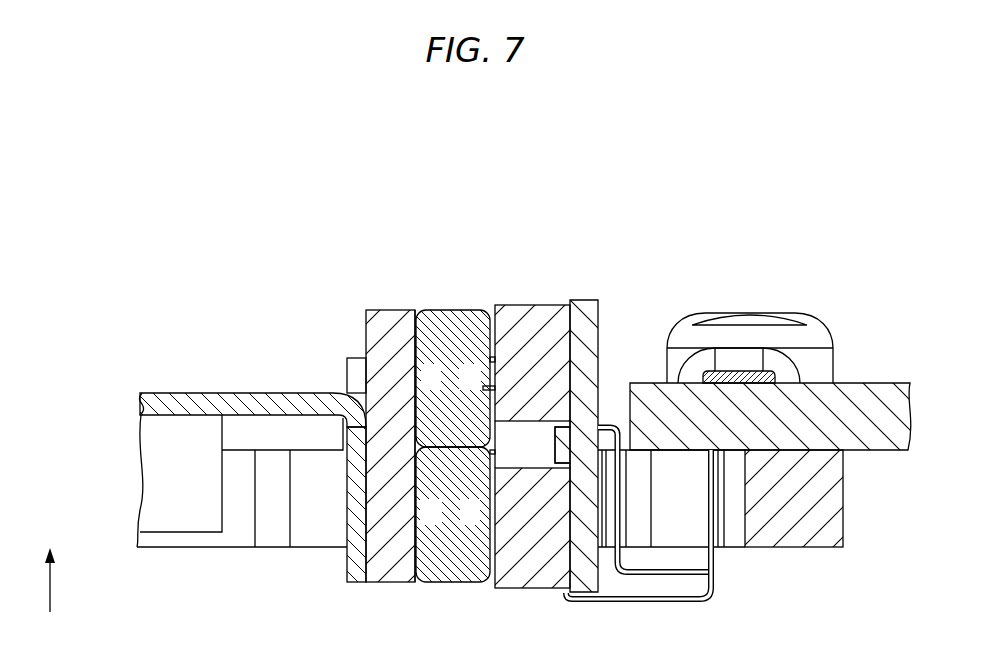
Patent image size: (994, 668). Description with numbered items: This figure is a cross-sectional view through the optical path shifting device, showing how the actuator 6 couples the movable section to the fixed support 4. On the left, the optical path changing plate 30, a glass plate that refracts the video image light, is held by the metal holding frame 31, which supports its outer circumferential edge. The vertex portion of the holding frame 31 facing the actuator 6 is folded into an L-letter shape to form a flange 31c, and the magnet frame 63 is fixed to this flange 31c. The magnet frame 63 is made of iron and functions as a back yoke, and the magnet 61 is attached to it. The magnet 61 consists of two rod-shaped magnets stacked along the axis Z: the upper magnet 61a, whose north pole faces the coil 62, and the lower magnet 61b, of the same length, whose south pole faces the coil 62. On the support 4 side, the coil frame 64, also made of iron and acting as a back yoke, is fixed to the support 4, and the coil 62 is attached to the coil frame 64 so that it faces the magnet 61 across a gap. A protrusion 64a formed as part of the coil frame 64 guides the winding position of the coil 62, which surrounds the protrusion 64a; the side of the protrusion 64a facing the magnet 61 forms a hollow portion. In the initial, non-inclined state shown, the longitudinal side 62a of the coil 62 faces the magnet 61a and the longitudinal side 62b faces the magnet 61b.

The support 4 is at (882, 392).
The actuator 6 is at (570, 161).
The optical path changing plate 30 is at (148, 457).
The holding frame 31 is at (220, 400).
The flange 31c is at (345, 498).
The magnet 61 is at (438, 391).
The magnet 61a is at (467, 310).
The magnet 61b is at (412, 487).
The coil 62 is at (543, 394).
The longitudinal side 62a is at (540, 313).
The longitudinal side 62b is at (515, 477).
The magnet frame 63 is at (385, 310).
The coil frame 64 is at (615, 396).
The protrusion 64a is at (552, 448).